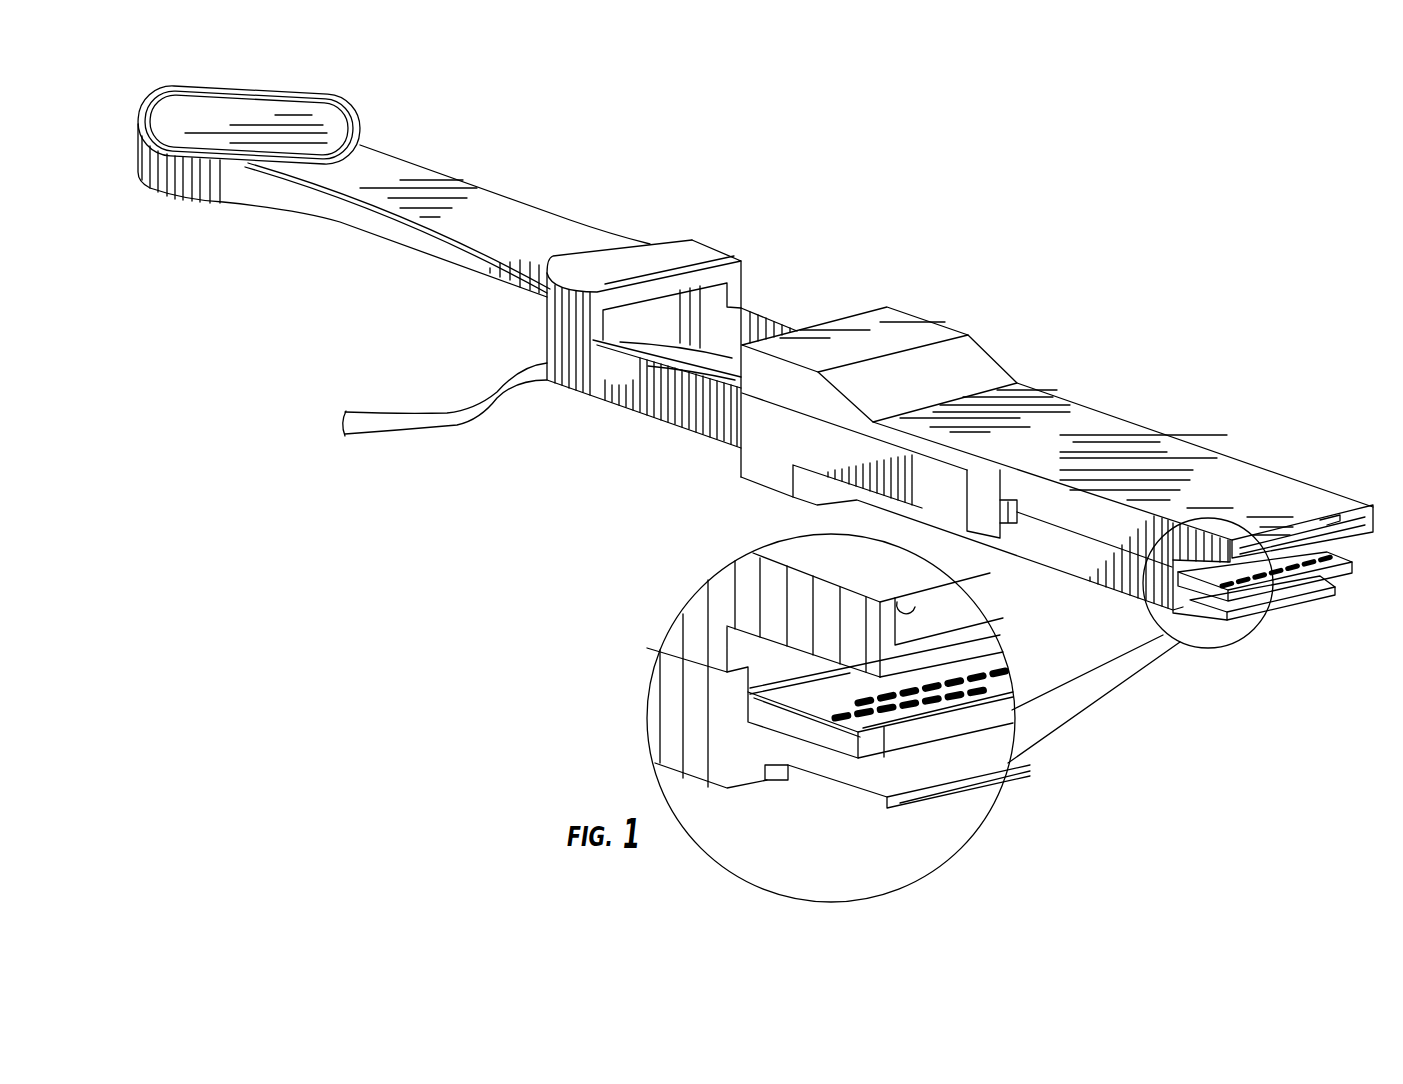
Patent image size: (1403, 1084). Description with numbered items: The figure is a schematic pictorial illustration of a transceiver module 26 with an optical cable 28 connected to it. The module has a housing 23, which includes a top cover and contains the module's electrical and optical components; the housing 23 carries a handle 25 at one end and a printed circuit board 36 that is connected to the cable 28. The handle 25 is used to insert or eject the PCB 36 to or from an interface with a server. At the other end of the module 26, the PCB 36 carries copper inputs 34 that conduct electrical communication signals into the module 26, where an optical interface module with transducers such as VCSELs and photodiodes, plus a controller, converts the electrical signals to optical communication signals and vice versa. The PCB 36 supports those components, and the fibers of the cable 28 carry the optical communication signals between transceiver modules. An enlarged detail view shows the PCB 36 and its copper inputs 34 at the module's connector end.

The housing 23 is at (677, 400).
The handle 25 is at (525, 210).
The transceiver module 26 is at (1010, 285).
The optical cable 28 is at (410, 412).
The copper inputs 34 is at (1323, 595).
The printed circuit board (PCB) 36 is at (1245, 588).